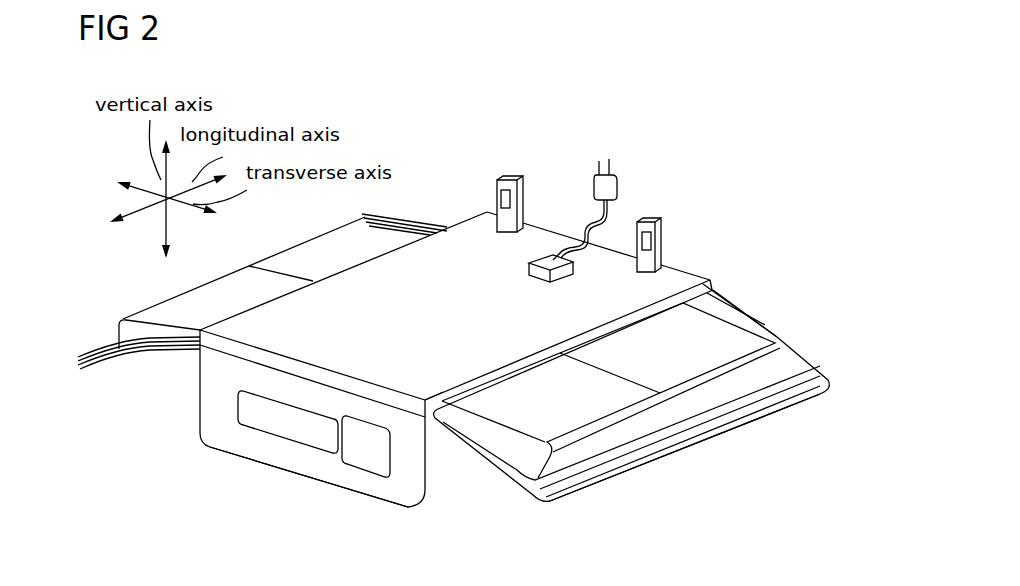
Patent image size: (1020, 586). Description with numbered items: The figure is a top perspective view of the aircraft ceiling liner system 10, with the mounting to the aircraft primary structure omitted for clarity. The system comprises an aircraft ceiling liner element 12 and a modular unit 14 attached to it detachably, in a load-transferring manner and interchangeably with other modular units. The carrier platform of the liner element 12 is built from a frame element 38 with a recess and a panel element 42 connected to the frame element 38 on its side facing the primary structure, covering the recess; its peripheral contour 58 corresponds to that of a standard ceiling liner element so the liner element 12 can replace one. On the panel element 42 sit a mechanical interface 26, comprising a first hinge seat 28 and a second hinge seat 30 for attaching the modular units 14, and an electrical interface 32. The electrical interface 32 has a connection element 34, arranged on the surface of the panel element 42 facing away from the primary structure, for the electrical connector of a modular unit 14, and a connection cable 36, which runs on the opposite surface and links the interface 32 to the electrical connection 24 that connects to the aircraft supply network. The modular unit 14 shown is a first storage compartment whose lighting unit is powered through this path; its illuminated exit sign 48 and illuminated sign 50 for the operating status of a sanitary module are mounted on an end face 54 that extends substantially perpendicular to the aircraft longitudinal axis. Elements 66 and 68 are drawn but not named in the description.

The aircraft ceiling liner system 10 is at (164, 498).
The aircraft ceiling liner element 12 is at (137, 383).
The modular unit 14 is at (190, 450).
The electrical connection 24 is at (597, 182).
The mechanical interface 26 is at (640, 92).
The first hinge seat 28 is at (513, 165).
The second hinge seat 30 is at (651, 200).
The electrical interface 32 is at (503, 261).
The connection element 34 is at (540, 270).
The connection cable 36 is at (587, 217).
The frame element 38 is at (733, 337).
The panel element 42 is at (680, 282).
The illuminated exit sign 48 is at (283, 430).
The illuminated sign for displaying an operating status of a sanitary module 50 is at (360, 457).
The end face 54 is at (402, 485).
The peripheral contour 58 is at (582, 490).
The first holding element 66 is at (497, 196).
The second holding element 68 is at (637, 218).